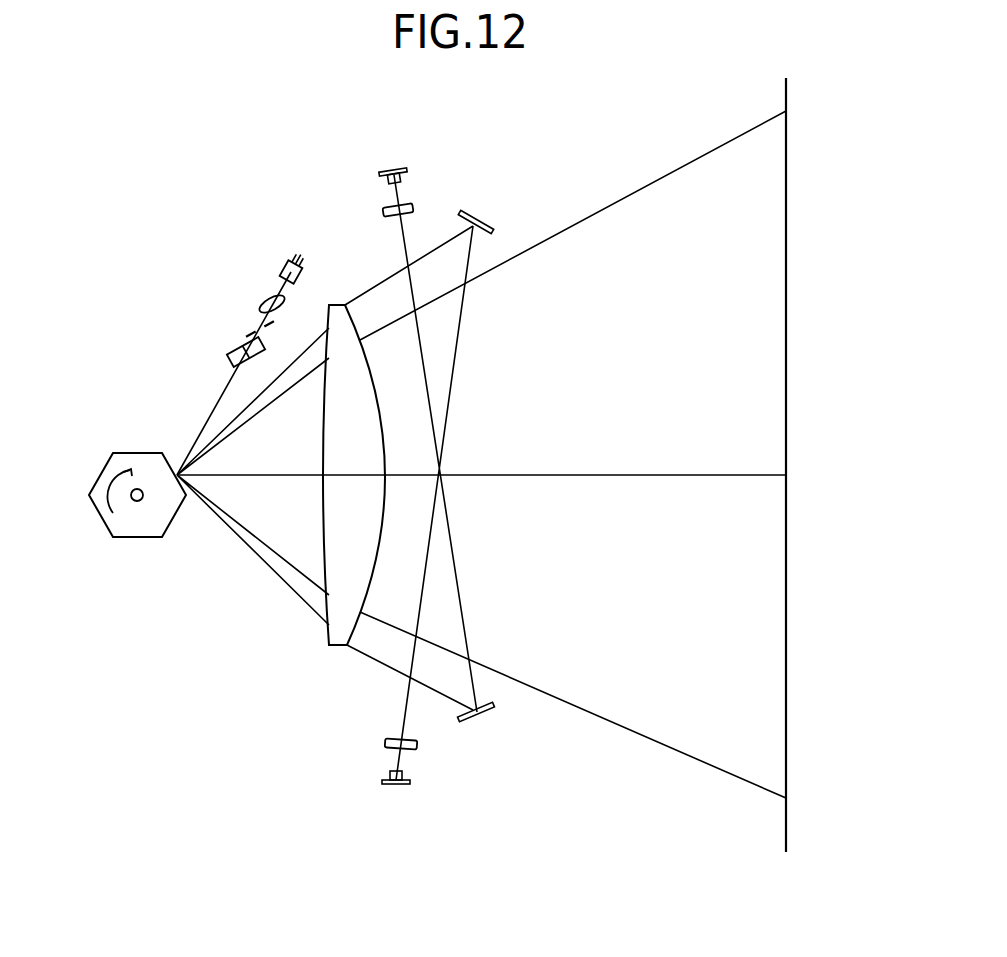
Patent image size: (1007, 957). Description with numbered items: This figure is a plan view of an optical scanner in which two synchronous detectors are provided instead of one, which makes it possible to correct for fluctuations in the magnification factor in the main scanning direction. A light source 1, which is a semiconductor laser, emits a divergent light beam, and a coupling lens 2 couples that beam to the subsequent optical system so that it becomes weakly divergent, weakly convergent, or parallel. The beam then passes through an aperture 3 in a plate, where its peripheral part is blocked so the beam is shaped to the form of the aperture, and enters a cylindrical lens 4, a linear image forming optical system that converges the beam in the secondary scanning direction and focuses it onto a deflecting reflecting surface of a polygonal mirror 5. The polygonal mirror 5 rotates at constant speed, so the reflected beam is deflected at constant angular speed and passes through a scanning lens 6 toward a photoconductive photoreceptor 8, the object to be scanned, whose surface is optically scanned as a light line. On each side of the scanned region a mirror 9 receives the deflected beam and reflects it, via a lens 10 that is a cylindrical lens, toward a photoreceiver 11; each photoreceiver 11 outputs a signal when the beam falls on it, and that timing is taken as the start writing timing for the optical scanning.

The light source 1 is at (280, 265).
The coupling lens 2 is at (261, 300).
The aperture 3 is at (246, 324).
The cylindrical lens 4 is at (227, 352).
The polygonal mirror 5 is at (128, 540).
The scanning lens 6 is at (325, 648).
The photoconductive photoreceptor 8 is at (786, 598).
The mirror 9 is at (480, 216).
The lens 10 is at (414, 207).
The photoreceiver 11 is at (406, 170).